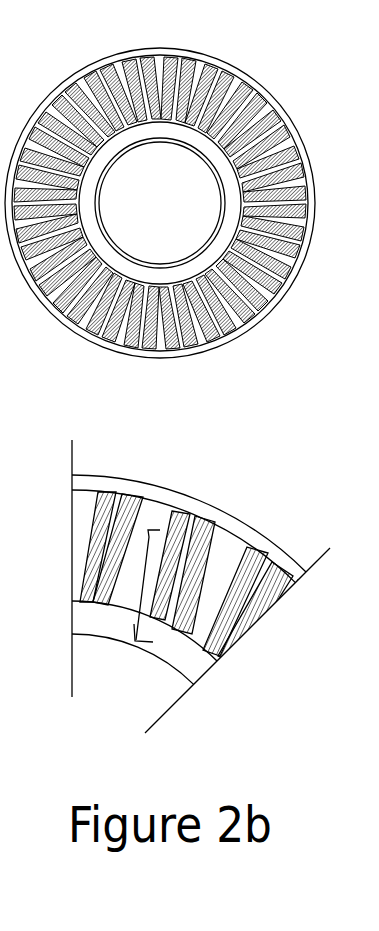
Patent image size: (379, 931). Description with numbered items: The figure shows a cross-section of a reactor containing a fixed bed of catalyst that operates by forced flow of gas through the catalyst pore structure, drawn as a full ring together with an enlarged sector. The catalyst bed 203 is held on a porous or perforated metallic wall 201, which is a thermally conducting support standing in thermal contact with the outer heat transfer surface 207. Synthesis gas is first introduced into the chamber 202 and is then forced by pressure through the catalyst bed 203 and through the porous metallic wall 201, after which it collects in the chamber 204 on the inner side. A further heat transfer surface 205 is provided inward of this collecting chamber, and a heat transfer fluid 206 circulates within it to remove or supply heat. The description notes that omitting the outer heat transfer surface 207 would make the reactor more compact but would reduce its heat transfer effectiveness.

The porous metallic wall 201 is at (191, 506).
The chamber 202 is at (224, 540).
The catalyst bed 203 is at (252, 606).
The chamber 204 is at (190, 668).
The further heat transfer surface 205 is at (170, 697).
The heat transfer fluid 206 is at (149, 709).
The heat transfer surface 207 is at (293, 562).